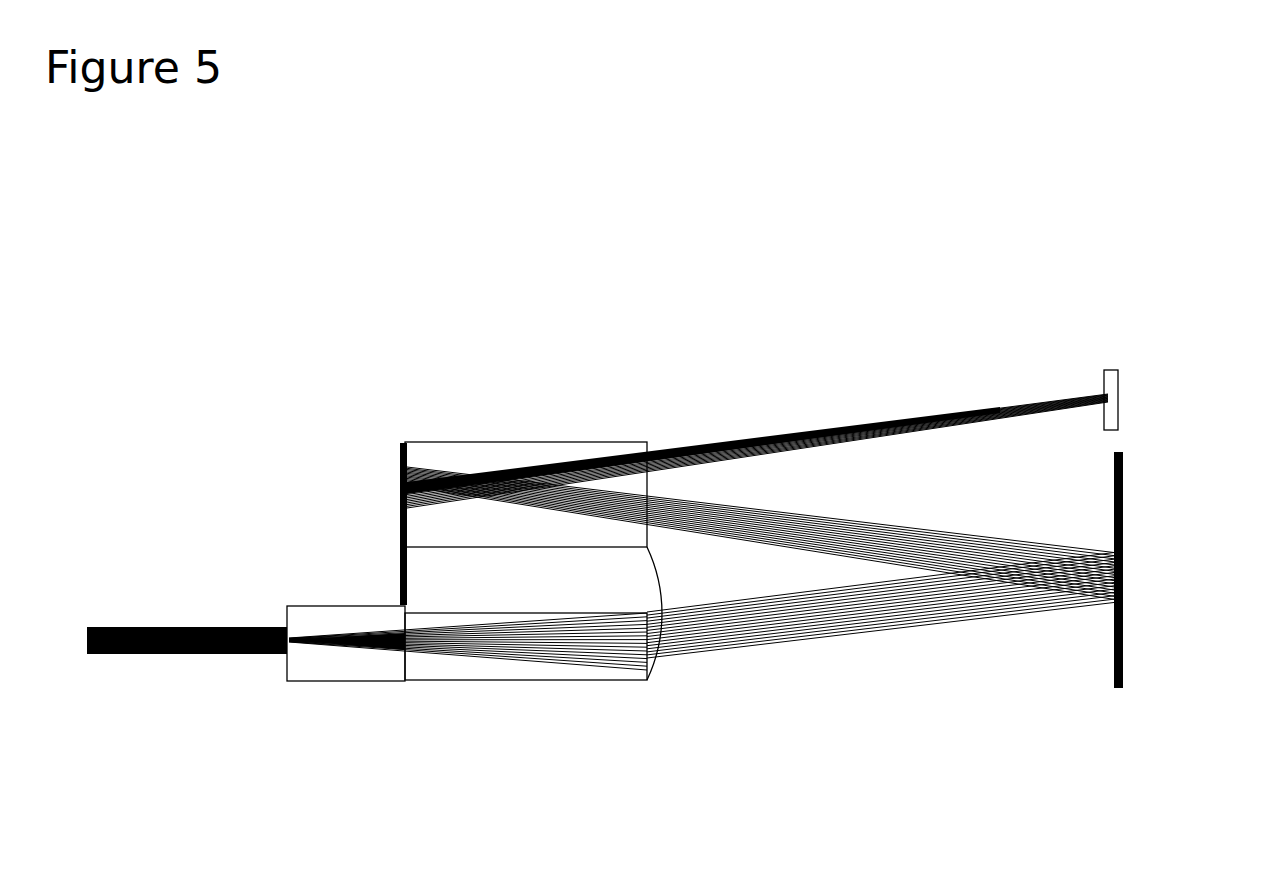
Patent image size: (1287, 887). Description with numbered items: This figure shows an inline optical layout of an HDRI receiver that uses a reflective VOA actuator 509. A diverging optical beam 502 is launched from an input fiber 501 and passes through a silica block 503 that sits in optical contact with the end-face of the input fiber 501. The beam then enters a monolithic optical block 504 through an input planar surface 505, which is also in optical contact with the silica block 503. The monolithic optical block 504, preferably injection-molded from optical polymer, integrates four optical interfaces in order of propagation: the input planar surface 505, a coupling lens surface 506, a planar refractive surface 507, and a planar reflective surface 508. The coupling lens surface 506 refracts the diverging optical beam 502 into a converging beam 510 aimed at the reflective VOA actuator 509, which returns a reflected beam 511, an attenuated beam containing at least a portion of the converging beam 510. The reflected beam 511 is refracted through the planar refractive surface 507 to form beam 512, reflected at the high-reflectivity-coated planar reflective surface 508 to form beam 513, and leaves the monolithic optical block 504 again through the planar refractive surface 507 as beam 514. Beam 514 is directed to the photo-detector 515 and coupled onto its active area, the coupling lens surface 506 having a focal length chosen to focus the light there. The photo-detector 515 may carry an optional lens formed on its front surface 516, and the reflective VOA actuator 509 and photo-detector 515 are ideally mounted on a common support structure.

The input fiber 501 is at (121, 627).
The diverging optical beam 502 is at (318, 666).
The silica block 503 is at (365, 663).
The monolithic optical block 504 is at (517, 397).
The input planar surface 505 is at (430, 672).
The coupling lens surface 506 is at (655, 663).
The planar refractive surface 507 is at (672, 483).
The planar reflective surface 508 is at (400, 465).
The reflective VOA actuator 509 is at (1123, 528).
The converging beam 510 is at (882, 628).
The reflected beam 511 is at (762, 533).
The beam 512 is at (450, 521).
The beam 513 is at (480, 451).
The beam 514 is at (757, 440).
The photo-detector 515 is at (1143, 400).
The front surface 516 is at (1078, 372).